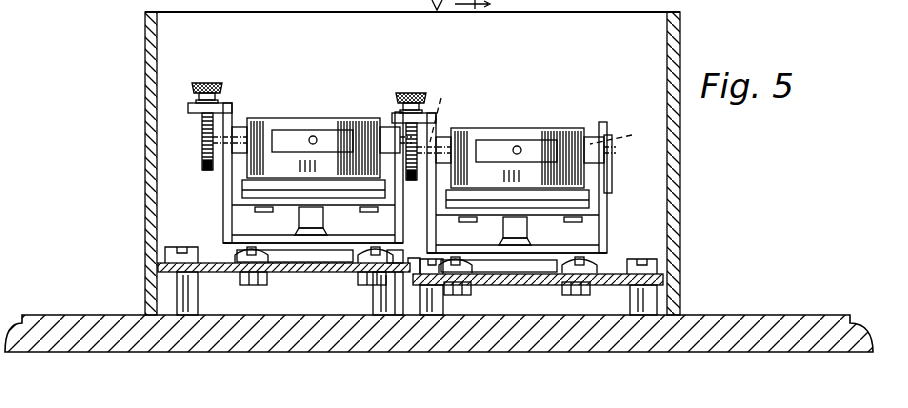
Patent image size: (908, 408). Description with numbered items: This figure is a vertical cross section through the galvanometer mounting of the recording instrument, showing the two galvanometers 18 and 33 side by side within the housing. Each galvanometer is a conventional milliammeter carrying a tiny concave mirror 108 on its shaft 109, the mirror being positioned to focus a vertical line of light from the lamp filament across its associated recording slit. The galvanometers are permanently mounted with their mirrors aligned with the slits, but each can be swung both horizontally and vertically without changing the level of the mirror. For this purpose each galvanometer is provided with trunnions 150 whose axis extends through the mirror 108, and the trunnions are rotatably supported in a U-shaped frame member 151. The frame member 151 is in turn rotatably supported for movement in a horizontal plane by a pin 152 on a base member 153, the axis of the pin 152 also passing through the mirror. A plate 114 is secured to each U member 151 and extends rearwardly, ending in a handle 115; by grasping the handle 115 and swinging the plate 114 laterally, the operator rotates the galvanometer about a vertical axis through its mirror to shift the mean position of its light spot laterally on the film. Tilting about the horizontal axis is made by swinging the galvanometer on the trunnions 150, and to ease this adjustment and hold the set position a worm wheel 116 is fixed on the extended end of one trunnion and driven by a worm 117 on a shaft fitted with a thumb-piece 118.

The galvanometer 18 is at (554, 125).
The galvanometer 33 is at (353, 112).
The concave mirror 108 is at (312, 137).
The shaft 109 is at (312, 146).
The plate 114 is at (343, 249).
The handle 115 is at (300, 222).
The worm wheel 116 is at (206, 169).
The worm 117 is at (203, 136).
The thumb-piece 118 is at (213, 75).
The trunnions 150 is at (548, 112).
The U-shaped frame member 151 is at (223, 217).
The pin 152 is at (314, 233).
The base member 153 is at (238, 258).